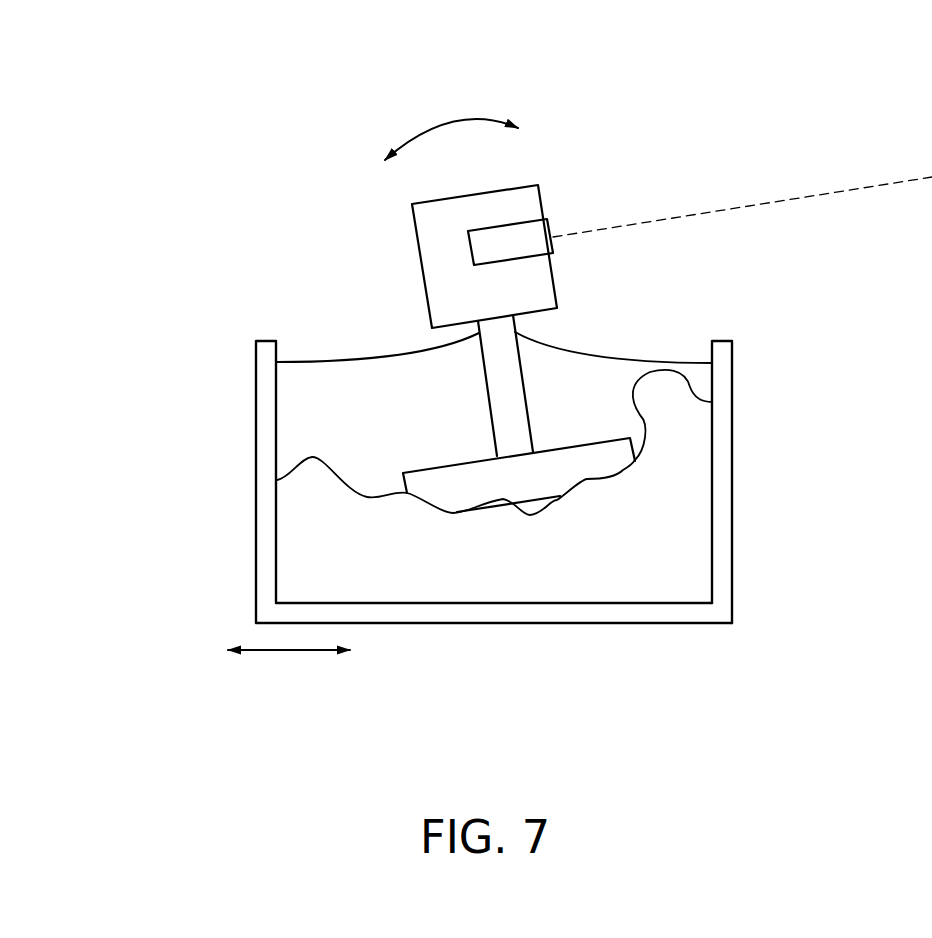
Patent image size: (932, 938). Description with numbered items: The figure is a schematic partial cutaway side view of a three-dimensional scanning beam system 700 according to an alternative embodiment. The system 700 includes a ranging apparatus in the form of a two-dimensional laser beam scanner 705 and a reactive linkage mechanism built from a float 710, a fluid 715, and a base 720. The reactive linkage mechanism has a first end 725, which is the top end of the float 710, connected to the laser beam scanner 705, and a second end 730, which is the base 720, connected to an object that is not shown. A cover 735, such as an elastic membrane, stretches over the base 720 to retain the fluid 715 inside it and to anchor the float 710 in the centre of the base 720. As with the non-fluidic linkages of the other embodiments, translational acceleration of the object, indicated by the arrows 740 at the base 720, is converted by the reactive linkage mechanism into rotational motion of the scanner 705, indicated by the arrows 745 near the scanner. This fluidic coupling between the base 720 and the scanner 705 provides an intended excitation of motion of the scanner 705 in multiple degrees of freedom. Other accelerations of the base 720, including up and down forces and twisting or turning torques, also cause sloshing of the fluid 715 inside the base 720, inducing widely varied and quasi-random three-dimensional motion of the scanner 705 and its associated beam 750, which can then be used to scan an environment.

The 3D scanning beam system 700 is at (300, 268).
The 2D laser beam scanner 705 is at (530, 202).
The float 710 is at (560, 443).
The fluid 715 is at (330, 467).
The base 720 is at (722, 448).
The first end 725 is at (542, 332).
The second end 730 is at (752, 623).
The cover 735 is at (695, 358).
The arrows 740 is at (277, 651).
The arrows 745 is at (453, 123).
The beam 750 is at (748, 207).